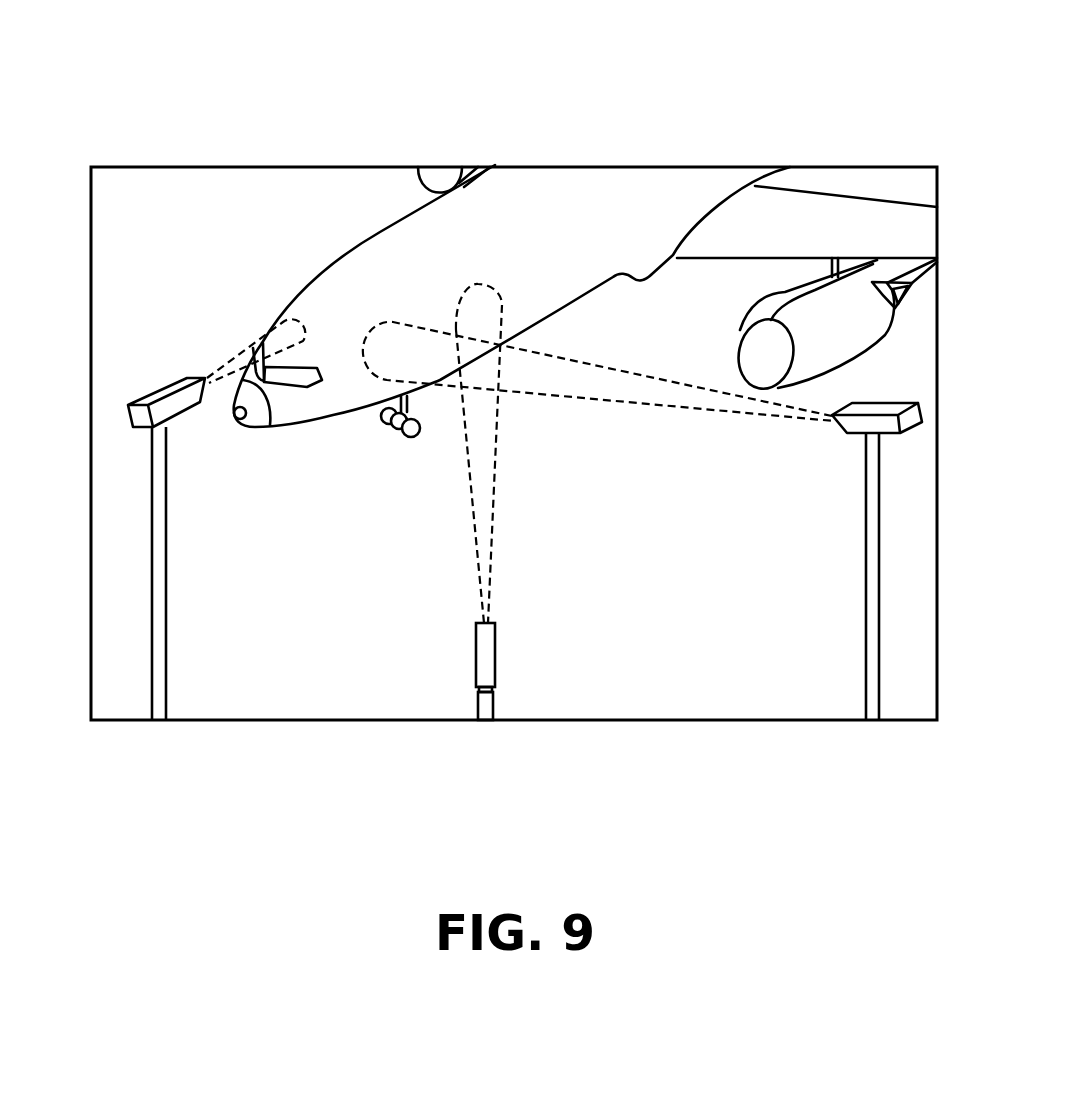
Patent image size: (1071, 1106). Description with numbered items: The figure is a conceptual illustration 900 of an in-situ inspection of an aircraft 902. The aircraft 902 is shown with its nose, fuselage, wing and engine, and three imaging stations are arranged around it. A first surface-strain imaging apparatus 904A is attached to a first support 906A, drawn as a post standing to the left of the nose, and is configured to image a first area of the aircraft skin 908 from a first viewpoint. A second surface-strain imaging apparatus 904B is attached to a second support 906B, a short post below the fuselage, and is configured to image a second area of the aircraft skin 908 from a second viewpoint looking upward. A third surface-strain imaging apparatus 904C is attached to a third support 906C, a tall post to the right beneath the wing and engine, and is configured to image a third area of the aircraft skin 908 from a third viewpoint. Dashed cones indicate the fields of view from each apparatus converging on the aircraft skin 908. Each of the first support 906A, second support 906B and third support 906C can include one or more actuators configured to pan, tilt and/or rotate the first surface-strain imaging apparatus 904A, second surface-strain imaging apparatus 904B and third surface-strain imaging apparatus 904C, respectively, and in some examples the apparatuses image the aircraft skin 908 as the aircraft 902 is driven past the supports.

The conceptual illustration 900 is at (840, 76).
The aircraft 902 is at (625, 186).
The first surface-strain imaging apparatus 904A is at (143, 427).
The second surface-strain imaging apparatus 904B is at (476, 653).
The third surface-strain imaging apparatus 904C is at (855, 433).
The first support 906A is at (152, 530).
The second support 906B is at (487, 722).
The third support 906C is at (866, 543).
The aircraft skin 908 is at (316, 270).